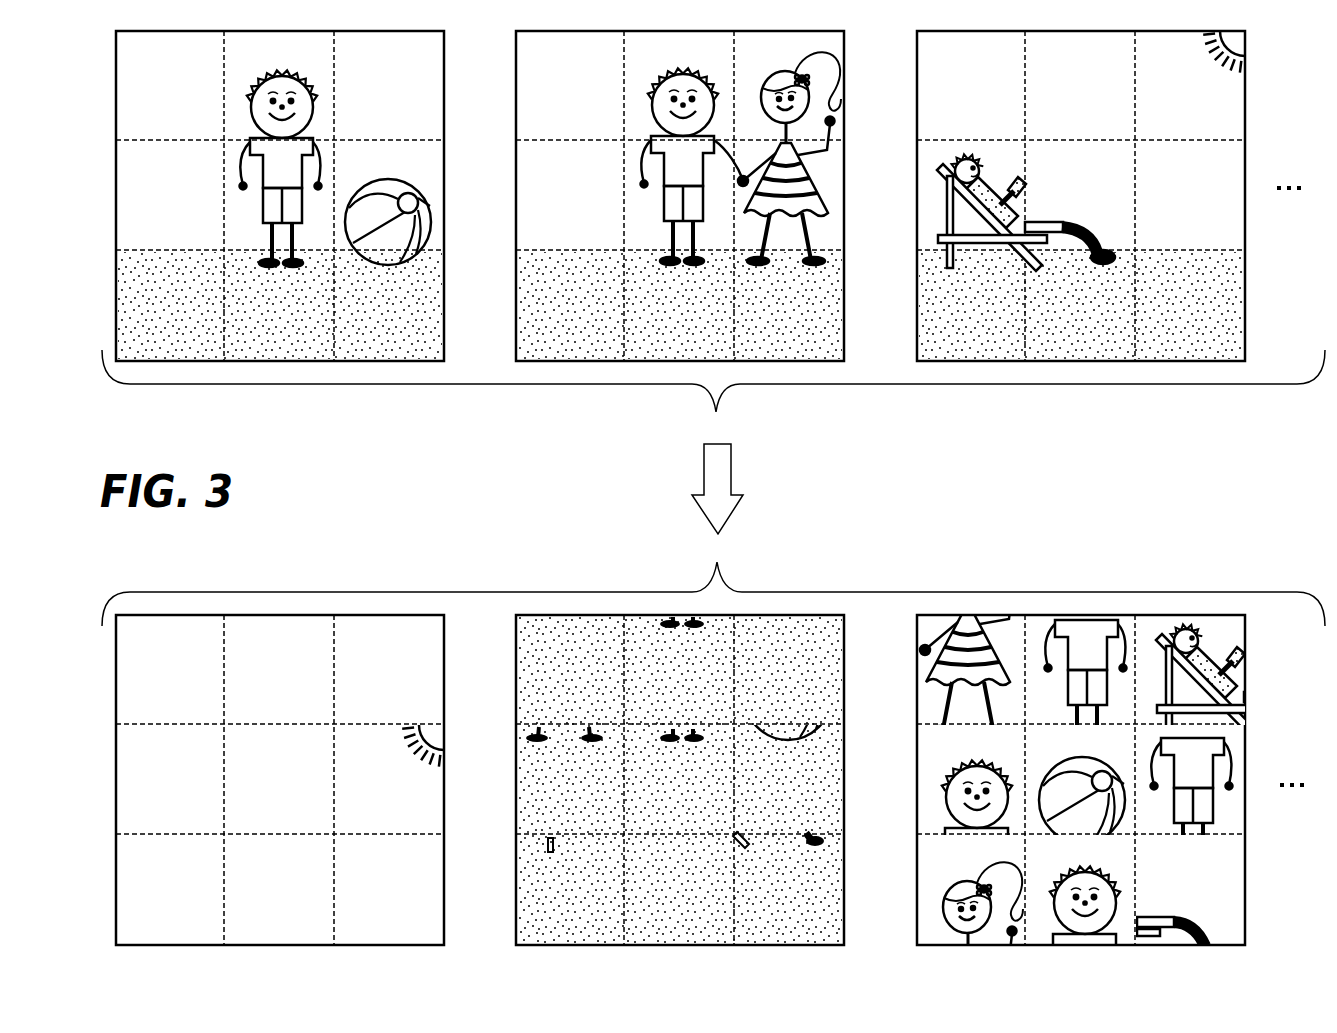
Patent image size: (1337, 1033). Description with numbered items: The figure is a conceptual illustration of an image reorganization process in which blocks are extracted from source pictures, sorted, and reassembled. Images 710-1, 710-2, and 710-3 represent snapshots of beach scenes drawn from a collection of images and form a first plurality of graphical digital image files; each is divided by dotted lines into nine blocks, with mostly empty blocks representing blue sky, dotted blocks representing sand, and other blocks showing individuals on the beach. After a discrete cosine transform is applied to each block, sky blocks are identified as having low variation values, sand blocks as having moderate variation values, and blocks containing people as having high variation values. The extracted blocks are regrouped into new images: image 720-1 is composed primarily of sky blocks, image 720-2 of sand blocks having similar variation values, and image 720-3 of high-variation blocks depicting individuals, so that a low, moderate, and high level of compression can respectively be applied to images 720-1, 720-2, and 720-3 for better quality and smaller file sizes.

The image 710-1 is at (445, 94).
The image 710-2 is at (845, 93).
The image 710-3 is at (1246, 99).
The image 720-1 is at (474, 640).
The image 720-2 is at (845, 677).
The image 720-3 is at (1247, 686).